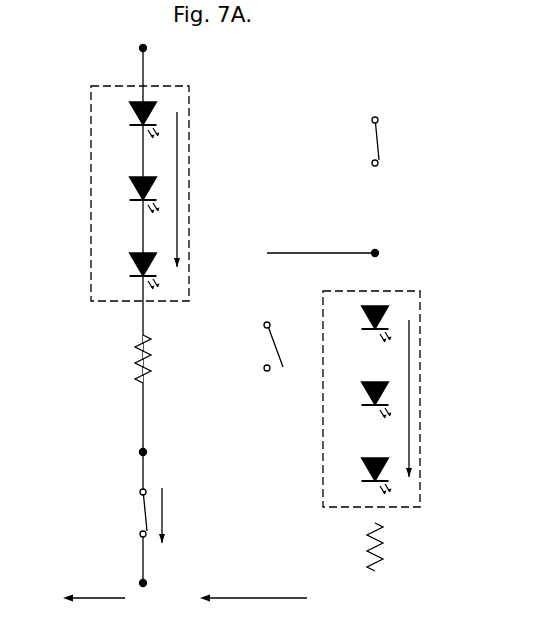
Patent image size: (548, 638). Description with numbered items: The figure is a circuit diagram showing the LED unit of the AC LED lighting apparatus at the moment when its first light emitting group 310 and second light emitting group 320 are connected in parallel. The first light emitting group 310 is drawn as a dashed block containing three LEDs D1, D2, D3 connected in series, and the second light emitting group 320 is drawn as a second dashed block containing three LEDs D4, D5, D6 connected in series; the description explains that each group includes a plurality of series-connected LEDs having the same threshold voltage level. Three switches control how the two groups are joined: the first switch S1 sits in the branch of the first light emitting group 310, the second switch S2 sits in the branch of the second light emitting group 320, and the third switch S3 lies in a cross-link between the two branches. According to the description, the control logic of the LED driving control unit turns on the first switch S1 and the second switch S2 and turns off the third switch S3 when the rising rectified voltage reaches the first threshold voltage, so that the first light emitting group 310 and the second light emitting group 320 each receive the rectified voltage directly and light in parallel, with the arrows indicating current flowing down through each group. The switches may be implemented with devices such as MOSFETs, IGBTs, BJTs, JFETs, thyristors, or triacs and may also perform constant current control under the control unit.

The first light emitting group 310 is at (168, 193).
The second light emitting group 320 is at (400, 399).
The light emitting diode D1 is at (132, 120).
The light emitting diode D2 is at (132, 195).
The light emitting diode D3 is at (132, 271).
The light emitting diode D4 is at (364, 324).
The light emitting diode D5 is at (364, 400).
The light emitting diode D6 is at (364, 476).
The first switch S1 is at (137, 515).
The second switch S2 is at (361, 141).
The third switch S3 is at (260, 346).